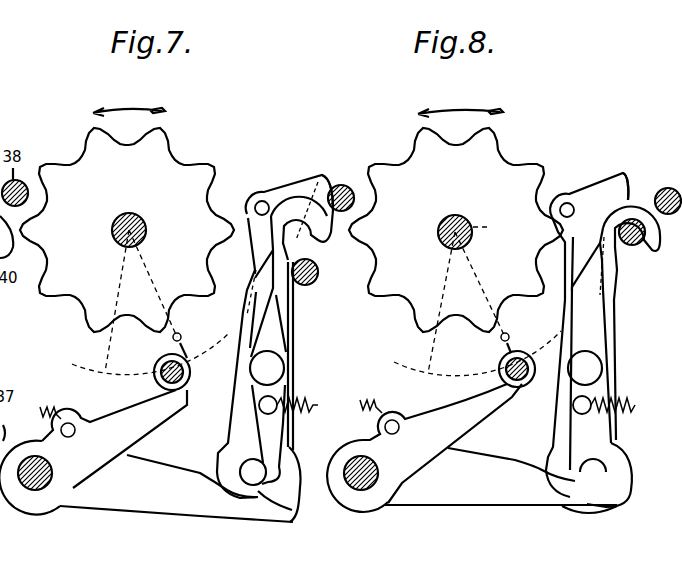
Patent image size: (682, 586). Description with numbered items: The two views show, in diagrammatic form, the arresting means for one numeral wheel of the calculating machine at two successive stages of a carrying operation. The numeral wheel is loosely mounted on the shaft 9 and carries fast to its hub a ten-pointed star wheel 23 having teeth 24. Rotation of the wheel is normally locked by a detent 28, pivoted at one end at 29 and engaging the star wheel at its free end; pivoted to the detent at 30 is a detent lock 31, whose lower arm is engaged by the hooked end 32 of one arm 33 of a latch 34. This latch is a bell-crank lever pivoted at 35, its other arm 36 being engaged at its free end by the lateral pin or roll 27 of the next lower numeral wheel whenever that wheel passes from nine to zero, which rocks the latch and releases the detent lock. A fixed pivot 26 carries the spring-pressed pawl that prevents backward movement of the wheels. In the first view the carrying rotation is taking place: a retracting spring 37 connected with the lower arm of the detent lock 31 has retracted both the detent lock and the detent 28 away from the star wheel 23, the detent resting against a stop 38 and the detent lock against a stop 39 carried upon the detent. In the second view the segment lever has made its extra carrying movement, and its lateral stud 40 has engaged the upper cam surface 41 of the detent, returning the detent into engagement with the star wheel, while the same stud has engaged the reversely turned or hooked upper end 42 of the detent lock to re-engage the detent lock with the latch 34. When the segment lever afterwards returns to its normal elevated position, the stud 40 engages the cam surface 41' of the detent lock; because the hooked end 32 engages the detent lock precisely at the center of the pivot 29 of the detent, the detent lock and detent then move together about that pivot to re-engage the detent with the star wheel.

In FIG. 7, the shaft 9 is at (150, 302).
In FIG. 8, the shaft 9 is at (477, 298).
In FIG. 7, the star wheel 23 is at (147, 230).
In FIG. 8, the star wheel 23 is at (469, 219).
In FIG. 7, the teeth 24 is at (176, 139).
In FIG. 8, the teeth 24 is at (492, 140).
In FIG. 7, the pivot 26 is at (297, 331).
In FIG. 8, the pivot 26 is at (609, 366).
In FIG. 7, the lateral pin or roll 27 is at (191, 376).
In FIG. 8, the lateral pin or roll 27 is at (531, 382).
In FIG. 7, the detent 28 is at (289, 321).
In FIG. 8, the detent 28 is at (605, 236).
In FIG. 7, the pivot 29 is at (243, 468).
In FIG. 8, the pivot 29 is at (589, 486).
In FIG. 7, the pivot 30 is at (285, 362).
In FIG. 8, the pivot 30 is at (602, 368).
In FIG. 7, the detent lock 31 is at (244, 358).
In FIG. 8, the detent lock 31 is at (559, 357).
In FIG. 7, the hooked end 32 is at (301, 522).
In FIG. 8, the hooked end 32 is at (608, 500).
In FIG. 7, the arm 33 is at (192, 476).
In FIG. 8, the arm 33 is at (511, 469).
In FIG. 7, the latch 34 is at (176, 519).
In FIG. 8, the latch 34 is at (501, 521).
In FIG. 7, the pivot 35 is at (54, 461).
In FIG. 8, the pivot 35 is at (381, 463).
In FIG. 7, the arm 36 is at (114, 439).
In FIG. 8, the arm 36 is at (442, 443).
In FIG. 7, the retracting spring 37 is at (193, 407).
In FIG. 8, the retracting spring 37 is at (639, 411).
In FIG. 7, the stop 38 is at (348, 186).
In FIG. 8, the stop 38 is at (668, 185).
In FIG. 7, the stop 39 is at (263, 191).
In FIG. 8, the stop 39 is at (571, 194).
In FIG. 7, the lateral stud 40 is at (317, 273).
In FIG. 8, the lateral stud 40 is at (632, 246).
In FIG. 7, the upper cam surface 41 is at (318, 225).
In FIG. 7, the cam surface 41' is at (317, 302).
In FIG. 8, the cam surface 41' is at (629, 288).
In FIG. 7, the hooked upper end 42 is at (320, 181).
In FIG. 8, the hooked upper end 42 is at (630, 199).